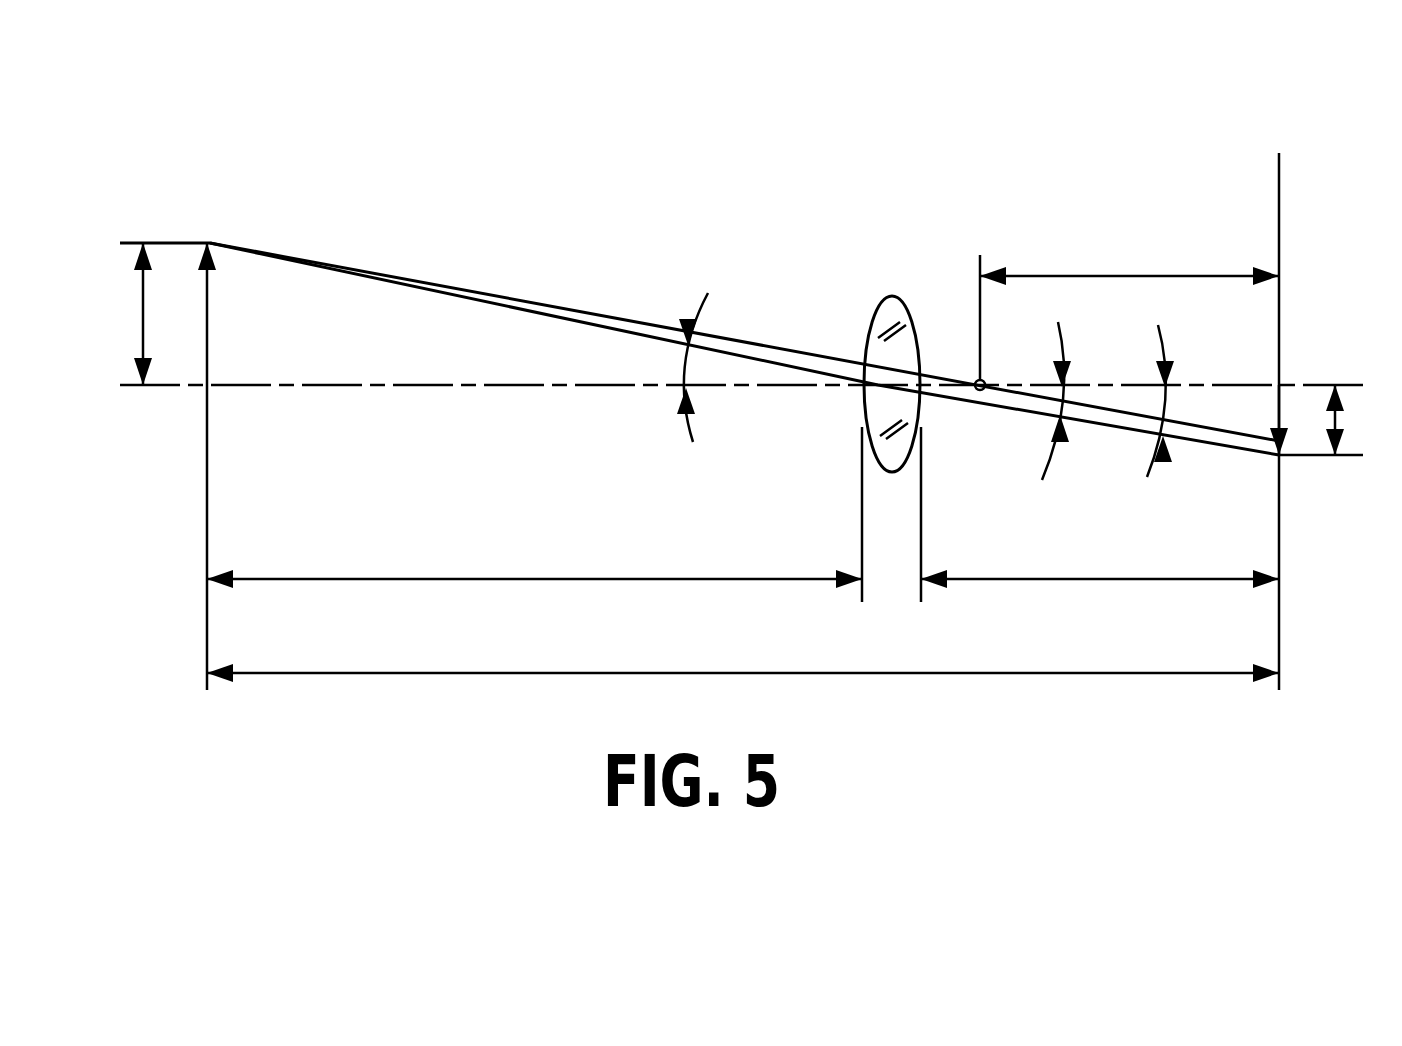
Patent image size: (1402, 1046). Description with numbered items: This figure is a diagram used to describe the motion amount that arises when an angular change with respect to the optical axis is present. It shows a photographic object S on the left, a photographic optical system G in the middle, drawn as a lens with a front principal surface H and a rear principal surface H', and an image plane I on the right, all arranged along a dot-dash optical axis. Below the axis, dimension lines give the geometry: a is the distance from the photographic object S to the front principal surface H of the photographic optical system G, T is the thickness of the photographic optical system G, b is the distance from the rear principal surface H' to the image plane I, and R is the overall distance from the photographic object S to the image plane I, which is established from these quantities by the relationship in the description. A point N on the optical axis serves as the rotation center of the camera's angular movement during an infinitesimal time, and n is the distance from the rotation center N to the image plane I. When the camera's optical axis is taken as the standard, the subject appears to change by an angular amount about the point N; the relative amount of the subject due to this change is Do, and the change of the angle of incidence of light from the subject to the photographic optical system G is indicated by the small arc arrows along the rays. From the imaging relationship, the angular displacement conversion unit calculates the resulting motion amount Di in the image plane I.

The photographic object S is at (209, 306).
The relative amount of the subject Do is at (144, 336).
The photographic optical system G is at (906, 310).
The front principal surface H is at (834, 514).
The rear principal surface H' is at (950, 514).
The rotation center point N is at (984, 381).
The distance from rotation center to image plane n is at (1121, 276).
The image plane I is at (1280, 200).
The motion amount in the image plane Di is at (1338, 422).
The object distance a is at (484, 579).
The thickness of the photographic optical system T is at (878, 579).
The image distance b is at (1024, 579).
The distance from object to image plane R is at (743, 651).